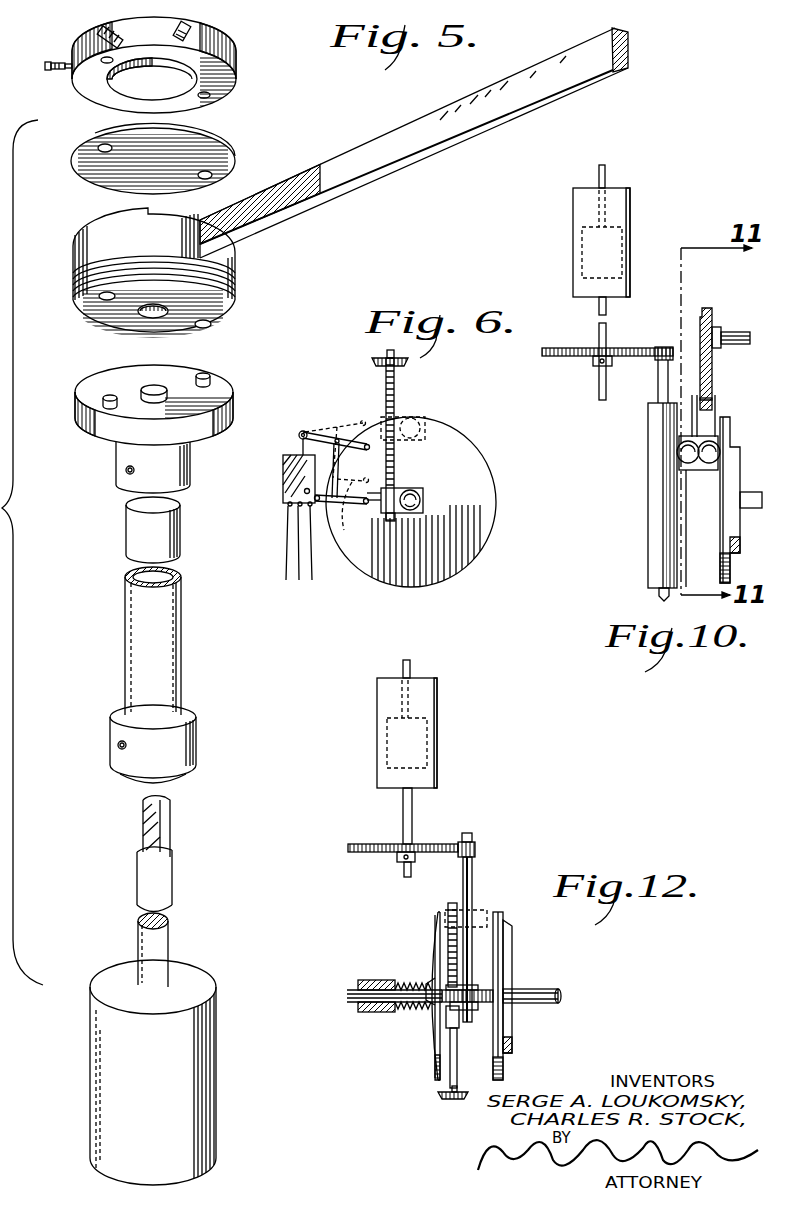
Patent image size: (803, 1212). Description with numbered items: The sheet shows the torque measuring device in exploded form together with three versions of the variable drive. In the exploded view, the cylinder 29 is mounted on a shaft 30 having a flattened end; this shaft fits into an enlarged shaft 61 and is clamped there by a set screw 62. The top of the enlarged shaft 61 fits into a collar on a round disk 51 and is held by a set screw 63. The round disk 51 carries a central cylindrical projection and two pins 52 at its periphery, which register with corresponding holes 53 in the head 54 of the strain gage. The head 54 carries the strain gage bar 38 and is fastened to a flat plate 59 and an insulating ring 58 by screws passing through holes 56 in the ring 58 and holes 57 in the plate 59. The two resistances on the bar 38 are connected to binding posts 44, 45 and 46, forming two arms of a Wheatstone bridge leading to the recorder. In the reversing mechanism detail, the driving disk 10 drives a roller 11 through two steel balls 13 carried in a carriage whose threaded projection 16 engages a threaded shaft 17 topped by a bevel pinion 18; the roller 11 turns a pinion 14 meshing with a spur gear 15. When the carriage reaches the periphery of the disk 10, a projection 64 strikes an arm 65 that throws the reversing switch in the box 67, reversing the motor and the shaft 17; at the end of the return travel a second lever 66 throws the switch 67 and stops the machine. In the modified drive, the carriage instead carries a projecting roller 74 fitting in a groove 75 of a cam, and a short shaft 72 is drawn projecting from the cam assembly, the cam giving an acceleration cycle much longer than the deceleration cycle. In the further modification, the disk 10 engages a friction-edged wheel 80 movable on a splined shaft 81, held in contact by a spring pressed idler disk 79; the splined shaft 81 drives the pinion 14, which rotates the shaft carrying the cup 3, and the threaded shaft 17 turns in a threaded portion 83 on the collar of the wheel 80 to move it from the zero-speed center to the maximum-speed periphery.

In FIG. 10, the cup 3 is at (632, 203).
In FIG. 12, the cup 3 is at (407, 733).
In FIG. 6, the driving disk 10 is at (368, 572).
In FIG. 10, the driving disk 10 is at (720, 543).
In FIG. 12, the driving disk 10 is at (505, 952).
In FIG. 10, the roller 11 is at (648, 543).
In FIG. 6, the steel balls 13 is at (424, 497).
In FIG. 12, the pinion 14 is at (477, 849).
In FIG. 12, the spur gear 15 is at (376, 853).
In FIG. 6, the threaded projection 16 is at (389, 507).
In FIG. 6, the threaded shaft 17 is at (394, 390).
In FIG. 12, the threaded shaft 17 is at (450, 1060).
In FIG. 6, the bevel pinion 18 is at (398, 360).
In FIG. 12, the bevel pinion 18 is at (440, 1096).
In FIG. 5, the cylinder 29 is at (88, 1066).
In FIG. 10, the cylinder 29 is at (623, 226).
In FIG. 12, the cylinder 29 is at (430, 728).
In FIG. 5, the shaft 30 is at (137, 873).
In FIG. 10, the shaft 30 is at (605, 170).
In FIG. 12, the shaft 30 is at (412, 668).
In FIG. 5, the strain gage bar 38 is at (413, 166).
In FIG. 5, the binding post 44 is at (55, 71).
In FIG. 5, the binding post 45 is at (112, 28).
In FIG. 5, the binding post 46 is at (184, 18).
In FIG. 5, the round disk 51 is at (235, 409).
In FIG. 5, the pins 52 is at (104, 398).
In FIG. 5, the holes 53 is at (100, 293).
In FIG. 5, the head 54 is at (88, 220).
In FIG. 5, the holes 56 is at (72, 50).
In FIG. 5, the holes 57 is at (98, 147).
In FIG. 5, the insulating ring 58 is at (234, 32).
In FIG. 5, the flat plate 59 is at (236, 157).
In FIG. 5, the enlarged shaft 61 is at (126, 547).
In FIG. 5, the set screw 62 is at (112, 750).
In FIG. 5, the set screw 63 is at (125, 470).
In FIG. 6, the projection 64 is at (370, 492).
In FIG. 6, the arm 65 is at (346, 436).
In FIG. 6, the second lever 66 is at (350, 532).
In FIG. 6, the reversing and stop switch 67 is at (283, 494).
In FIG. 10, the shaft 72 is at (740, 345).
In FIG. 10, the projecting roller 74 is at (710, 404).
In FIG. 10, the groove 75 is at (702, 318).
In FIG. 12, the idler disk 79 is at (434, 946).
In FIG. 12, the wheel 80 is at (488, 912).
In FIG. 12, the splined shaft 81 is at (470, 958).
In FIG. 12, the threaded portion 83 is at (446, 1021).